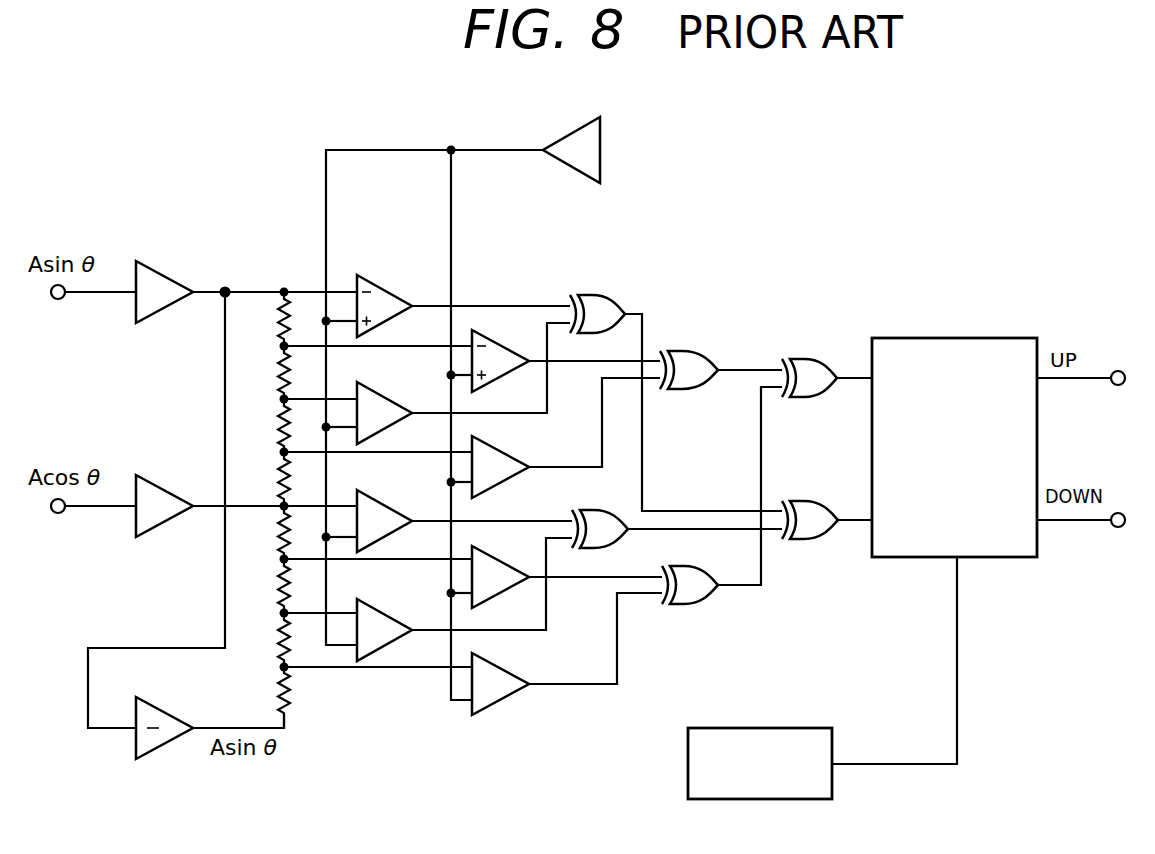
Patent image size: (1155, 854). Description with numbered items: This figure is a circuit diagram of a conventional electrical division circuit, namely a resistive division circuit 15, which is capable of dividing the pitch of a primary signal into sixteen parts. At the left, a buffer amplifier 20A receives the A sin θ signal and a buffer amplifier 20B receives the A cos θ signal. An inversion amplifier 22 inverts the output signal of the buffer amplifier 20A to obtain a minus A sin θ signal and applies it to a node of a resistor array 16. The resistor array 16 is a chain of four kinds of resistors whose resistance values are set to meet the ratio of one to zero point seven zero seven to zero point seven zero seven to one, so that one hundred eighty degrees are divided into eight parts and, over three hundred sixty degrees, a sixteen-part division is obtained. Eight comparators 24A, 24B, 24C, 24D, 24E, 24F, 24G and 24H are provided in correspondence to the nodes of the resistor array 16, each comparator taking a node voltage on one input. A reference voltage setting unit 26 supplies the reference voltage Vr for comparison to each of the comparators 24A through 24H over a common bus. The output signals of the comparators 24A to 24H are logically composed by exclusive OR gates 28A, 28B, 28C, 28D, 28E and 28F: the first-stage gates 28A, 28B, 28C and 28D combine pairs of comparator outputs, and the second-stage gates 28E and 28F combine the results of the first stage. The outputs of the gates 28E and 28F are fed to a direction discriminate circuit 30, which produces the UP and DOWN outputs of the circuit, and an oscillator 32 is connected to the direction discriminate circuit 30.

The resistive division circuit 15 is at (270, 182).
The resistor array 16 is at (285, 282).
The buffer amplifier 20A is at (164, 274).
The buffer amplifier 20B is at (165, 490).
The inversion amplifier 22 is at (165, 743).
The comparator 24A is at (387, 285).
The comparator 24B is at (497, 342).
The comparator 24C is at (392, 401).
The comparator 24D is at (505, 453).
The comparator 24E is at (392, 509).
The comparator 24F is at (500, 593).
The comparator 24G is at (392, 617).
The comparator 24H is at (505, 697).
The reference voltage setting unit 26 is at (575, 168).
The exclusive OR gate 28A is at (598, 295).
The exclusive OR gate 28B is at (690, 352).
The exclusive OR gate 28C is at (592, 512).
The exclusive OR gate 28D is at (693, 602).
The exclusive OR gate 28E is at (808, 360).
The exclusive OR gate 28F is at (810, 538).
The direction discriminate circuit 30 is at (955, 338).
The oscillator 32 is at (760, 728).